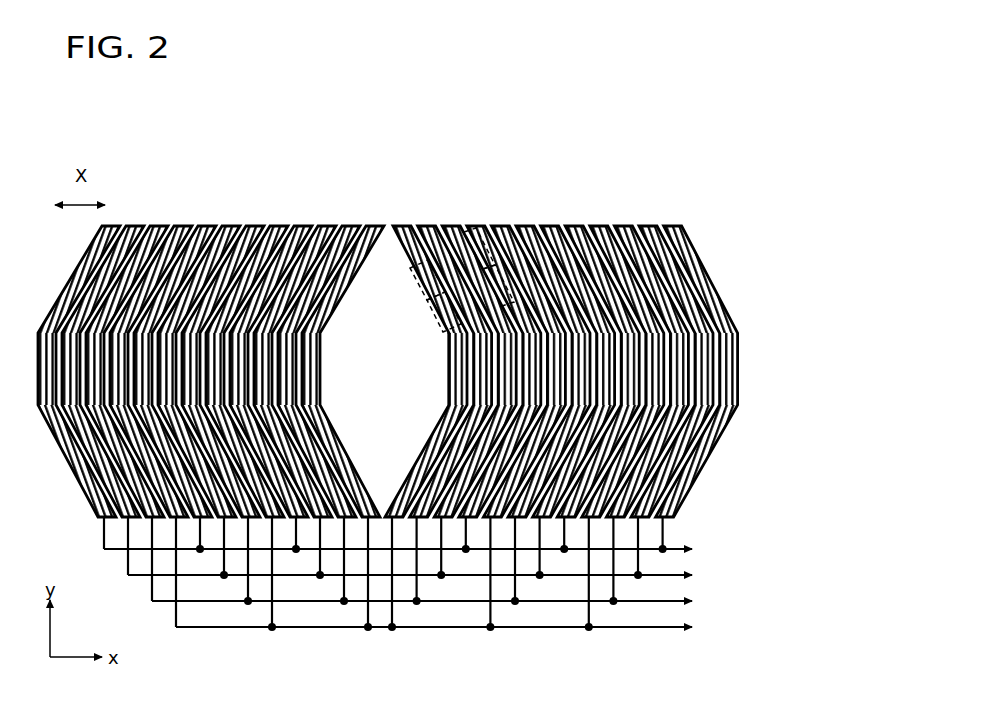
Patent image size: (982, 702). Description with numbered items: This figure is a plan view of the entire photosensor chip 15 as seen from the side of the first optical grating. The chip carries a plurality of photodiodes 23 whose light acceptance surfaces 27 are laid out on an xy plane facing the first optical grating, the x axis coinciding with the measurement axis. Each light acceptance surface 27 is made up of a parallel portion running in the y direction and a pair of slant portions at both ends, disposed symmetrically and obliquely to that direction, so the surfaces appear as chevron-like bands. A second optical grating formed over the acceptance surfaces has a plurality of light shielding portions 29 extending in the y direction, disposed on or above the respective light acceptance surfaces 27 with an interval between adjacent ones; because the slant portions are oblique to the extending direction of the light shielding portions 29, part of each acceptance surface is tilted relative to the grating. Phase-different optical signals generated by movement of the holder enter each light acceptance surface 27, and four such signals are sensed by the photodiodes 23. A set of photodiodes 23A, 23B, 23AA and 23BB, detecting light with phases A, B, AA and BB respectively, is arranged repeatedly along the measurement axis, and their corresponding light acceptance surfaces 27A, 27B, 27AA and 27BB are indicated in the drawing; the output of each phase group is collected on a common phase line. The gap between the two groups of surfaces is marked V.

The photosensor chip 15 is at (708, 223).
The photodiodes 23 is at (455, 315).
The photodiode 23A is at (405, 221).
The photodiode 23B is at (428, 221).
The photodiode 23AA is at (452, 221).
The photodiode 23BB is at (476, 221).
The light acceptance surface 27 is at (487, 254).
The light acceptance surface 27A is at (445, 335).
The light acceptance surface 27B is at (440, 308).
The light acceptance surface 27AA is at (541, 226).
The light acceptance surface 27BB is at (487, 225).
The gap between electrode groups V is at (447, 340).
The light shielding portions 29 is at (455, 370).